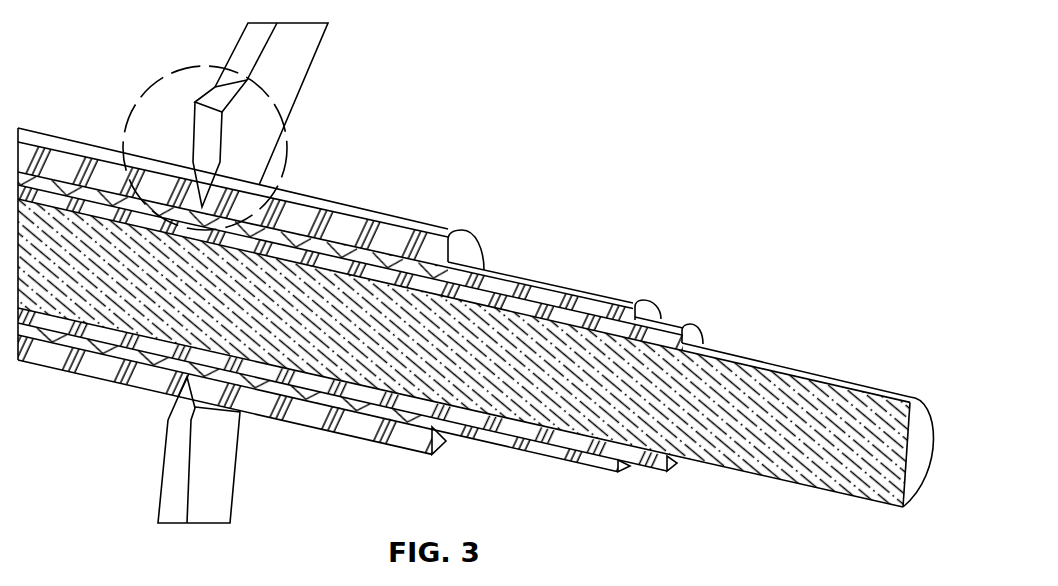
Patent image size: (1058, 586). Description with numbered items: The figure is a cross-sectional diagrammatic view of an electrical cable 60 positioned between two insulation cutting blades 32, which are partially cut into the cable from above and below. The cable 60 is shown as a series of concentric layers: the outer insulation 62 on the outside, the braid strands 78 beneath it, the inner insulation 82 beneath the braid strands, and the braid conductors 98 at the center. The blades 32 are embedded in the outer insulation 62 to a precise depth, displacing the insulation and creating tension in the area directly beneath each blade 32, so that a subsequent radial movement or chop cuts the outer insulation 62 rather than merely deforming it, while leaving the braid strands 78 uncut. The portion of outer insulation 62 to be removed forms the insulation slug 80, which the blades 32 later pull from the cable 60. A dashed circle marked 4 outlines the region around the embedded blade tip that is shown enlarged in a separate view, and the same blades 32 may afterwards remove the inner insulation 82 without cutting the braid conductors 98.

The detail region of cutting blade engagement 4 is at (178, 68).
The insulation cutting blade 32 is at (205, 206).
The electrical cable 60 is at (476, 317).
The outer insulation 62 is at (417, 237).
The braid strands 78 is at (537, 286).
The insulation slug 80 is at (346, 206).
The inner insulation 82 is at (664, 316).
The braid conductors 98 is at (827, 403).